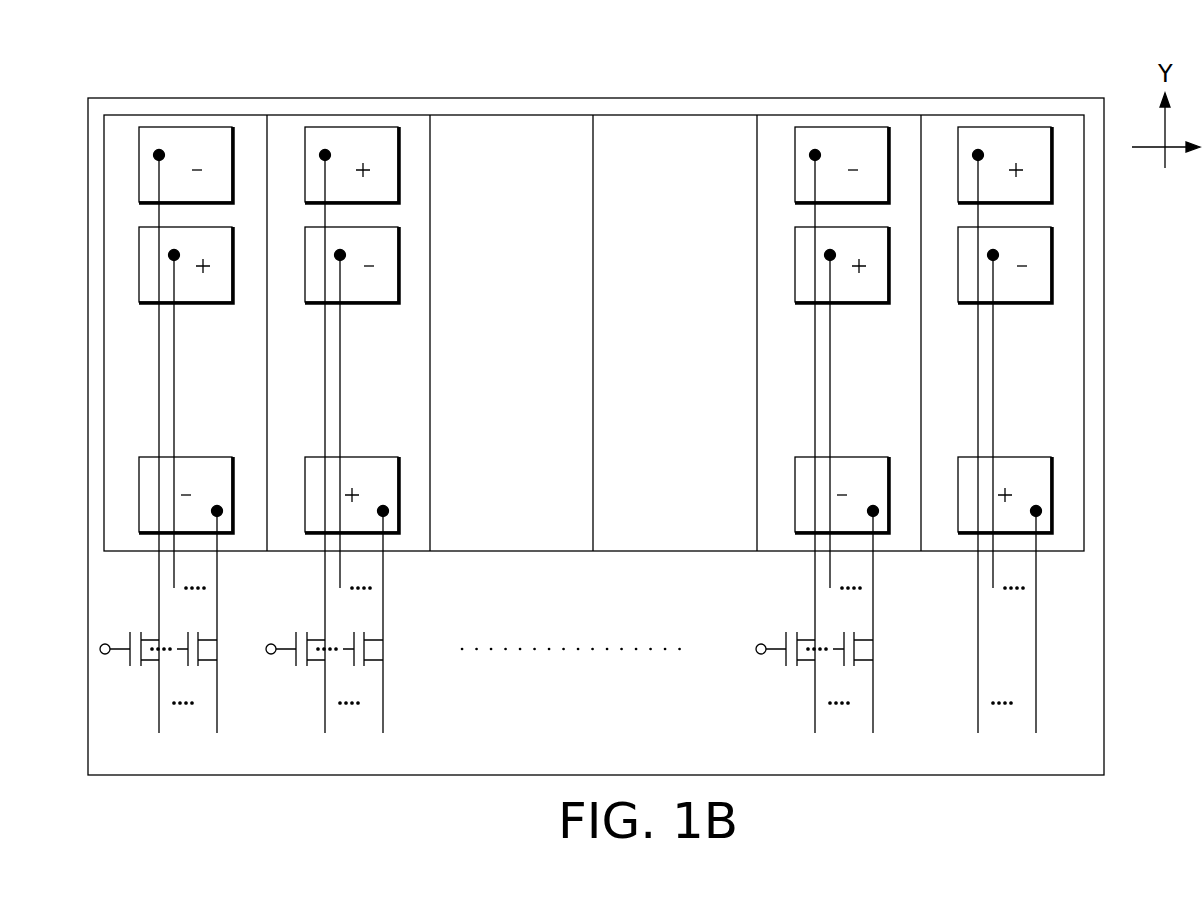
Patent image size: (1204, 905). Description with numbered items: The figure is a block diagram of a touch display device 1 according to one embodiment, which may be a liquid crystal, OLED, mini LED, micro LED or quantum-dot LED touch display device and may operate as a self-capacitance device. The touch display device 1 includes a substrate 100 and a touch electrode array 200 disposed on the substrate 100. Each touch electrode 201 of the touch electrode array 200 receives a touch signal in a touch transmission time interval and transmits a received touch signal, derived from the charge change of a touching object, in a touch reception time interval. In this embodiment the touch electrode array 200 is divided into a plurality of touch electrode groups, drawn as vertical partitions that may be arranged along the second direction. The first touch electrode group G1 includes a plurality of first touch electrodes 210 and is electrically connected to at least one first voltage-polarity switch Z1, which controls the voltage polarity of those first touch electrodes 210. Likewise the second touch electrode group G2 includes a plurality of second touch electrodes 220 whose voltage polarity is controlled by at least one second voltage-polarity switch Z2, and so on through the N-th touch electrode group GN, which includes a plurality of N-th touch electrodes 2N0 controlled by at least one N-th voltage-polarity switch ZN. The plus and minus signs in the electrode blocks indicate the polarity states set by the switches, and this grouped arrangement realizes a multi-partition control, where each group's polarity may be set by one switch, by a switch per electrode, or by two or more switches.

The touch display device 1 is at (638, 416).
The substrate 100 is at (1105, 548).
The touch electrode array 200 is at (1085, 243).
The touch electrode 201 is at (181, 126).
The first touch electrode 210 is at (185, 295).
The second touch electrode 220 is at (351, 295).
The N-th touch electrode 2N0 is at (1015, 295).
The first touch electrode group G1 is at (120, 540).
The second touch electrode group G2 is at (327, 622).
The N-th touch electrode group GN is at (819, 622).
The first voltage-polarity switch Z1 is at (154, 665).
The second voltage-polarity switch Z2 is at (320, 665).
The N-th voltage-polarity switch ZN is at (811, 665).